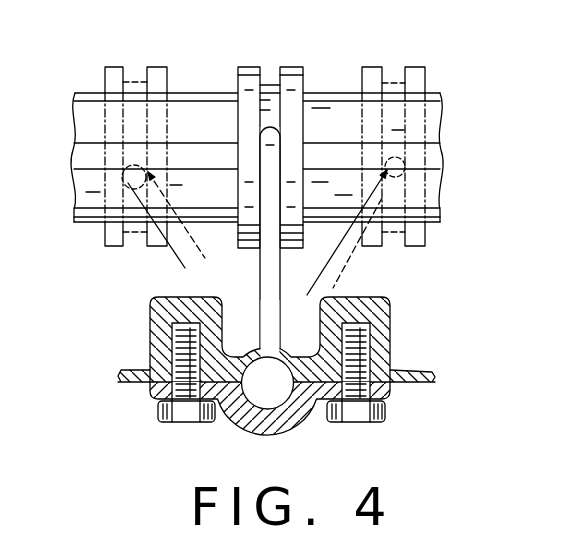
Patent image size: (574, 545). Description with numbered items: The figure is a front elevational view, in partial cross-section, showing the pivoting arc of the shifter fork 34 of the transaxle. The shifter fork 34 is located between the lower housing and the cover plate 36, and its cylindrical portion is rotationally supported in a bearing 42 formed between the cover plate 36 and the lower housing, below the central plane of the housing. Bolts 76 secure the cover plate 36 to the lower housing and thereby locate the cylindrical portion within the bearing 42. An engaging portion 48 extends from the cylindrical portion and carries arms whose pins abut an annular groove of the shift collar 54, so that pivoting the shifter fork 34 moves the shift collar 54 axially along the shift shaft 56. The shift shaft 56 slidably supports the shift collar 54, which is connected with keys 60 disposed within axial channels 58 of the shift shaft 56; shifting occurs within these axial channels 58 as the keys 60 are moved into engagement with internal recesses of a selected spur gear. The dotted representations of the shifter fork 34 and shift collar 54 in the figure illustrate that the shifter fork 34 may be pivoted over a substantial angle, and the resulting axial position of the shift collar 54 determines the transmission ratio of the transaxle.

The shifter fork 34 is at (300, 408).
The cover plate 36 is at (263, 425).
The bearing 42 is at (233, 414).
The engaging portion 48 is at (177, 256).
The shift collar 54 is at (115, 66).
The shift shaft 56 is at (437, 173).
The axial channels 58 is at (216, 90).
The keys 60 is at (210, 155).
The bolts 76 is at (168, 415).